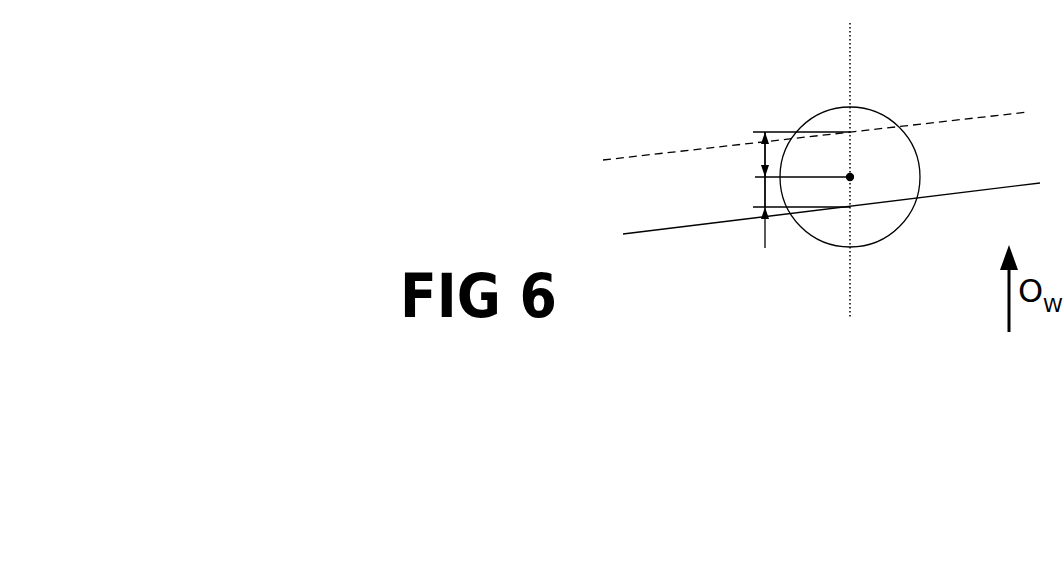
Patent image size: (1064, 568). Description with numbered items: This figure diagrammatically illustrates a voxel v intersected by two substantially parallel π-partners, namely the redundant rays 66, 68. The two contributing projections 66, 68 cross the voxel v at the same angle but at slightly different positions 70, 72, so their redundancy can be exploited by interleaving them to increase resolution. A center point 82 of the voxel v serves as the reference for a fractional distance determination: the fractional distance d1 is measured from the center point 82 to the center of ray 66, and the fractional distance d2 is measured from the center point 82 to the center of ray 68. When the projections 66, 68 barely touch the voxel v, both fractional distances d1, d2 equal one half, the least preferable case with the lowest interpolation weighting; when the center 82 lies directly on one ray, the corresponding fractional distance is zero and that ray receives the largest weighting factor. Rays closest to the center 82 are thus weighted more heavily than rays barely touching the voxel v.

The redundant ray 66 is at (635, 157).
The redundant ray 68 is at (637, 232).
The position 70 is at (848, 132).
The position 72 is at (850, 207).
The center point 82 is at (853, 177).
The fractional distance d1 is at (762, 156).
The fractional distance d2 is at (760, 192).
The voxel v is at (918, 157).